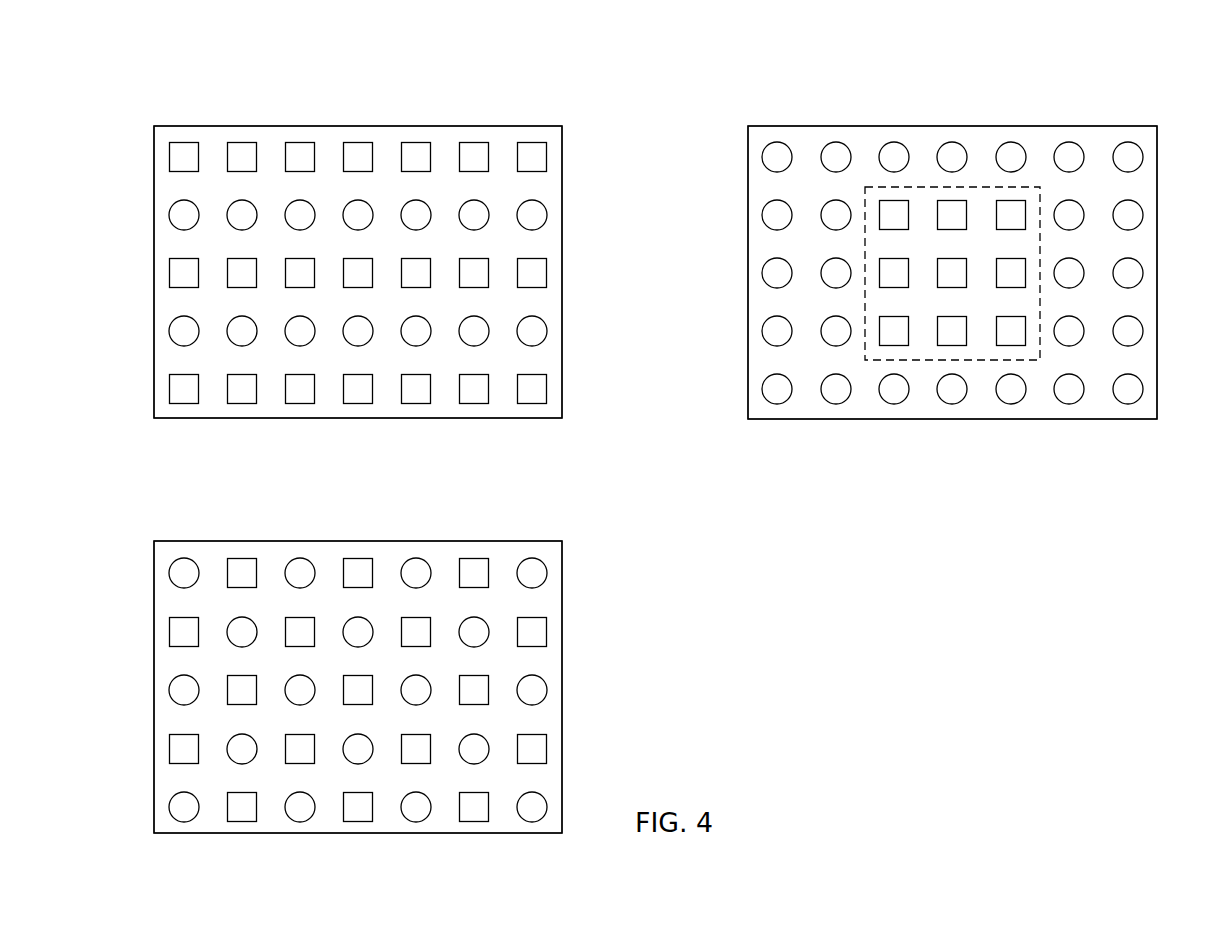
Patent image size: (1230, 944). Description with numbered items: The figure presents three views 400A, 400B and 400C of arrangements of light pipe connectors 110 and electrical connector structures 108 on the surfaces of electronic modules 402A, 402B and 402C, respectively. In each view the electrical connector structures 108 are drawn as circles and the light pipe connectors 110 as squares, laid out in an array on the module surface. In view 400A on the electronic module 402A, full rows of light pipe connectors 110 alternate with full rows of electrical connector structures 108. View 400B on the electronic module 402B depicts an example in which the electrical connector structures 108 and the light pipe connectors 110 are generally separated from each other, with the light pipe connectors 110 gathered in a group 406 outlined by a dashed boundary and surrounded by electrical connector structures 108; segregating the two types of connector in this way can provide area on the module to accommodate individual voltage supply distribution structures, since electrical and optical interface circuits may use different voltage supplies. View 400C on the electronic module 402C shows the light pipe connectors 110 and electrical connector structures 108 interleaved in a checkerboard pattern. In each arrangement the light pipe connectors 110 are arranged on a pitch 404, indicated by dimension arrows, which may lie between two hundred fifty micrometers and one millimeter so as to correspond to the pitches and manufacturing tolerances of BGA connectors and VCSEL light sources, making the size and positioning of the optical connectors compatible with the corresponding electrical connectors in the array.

The view 400A is at (107, 129).
The view 400B is at (707, 129).
The view 400C is at (107, 550).
The electronic module 402A is at (562, 418).
The electronic module 402B is at (748, 419).
The electronic module 402C is at (562, 541).
The pitch 404 is at (416, 142).
The group 406 is at (1040, 360).
The electrical connector structure 108 is at (486, 338).
The light pipe connector 110 is at (372, 558).